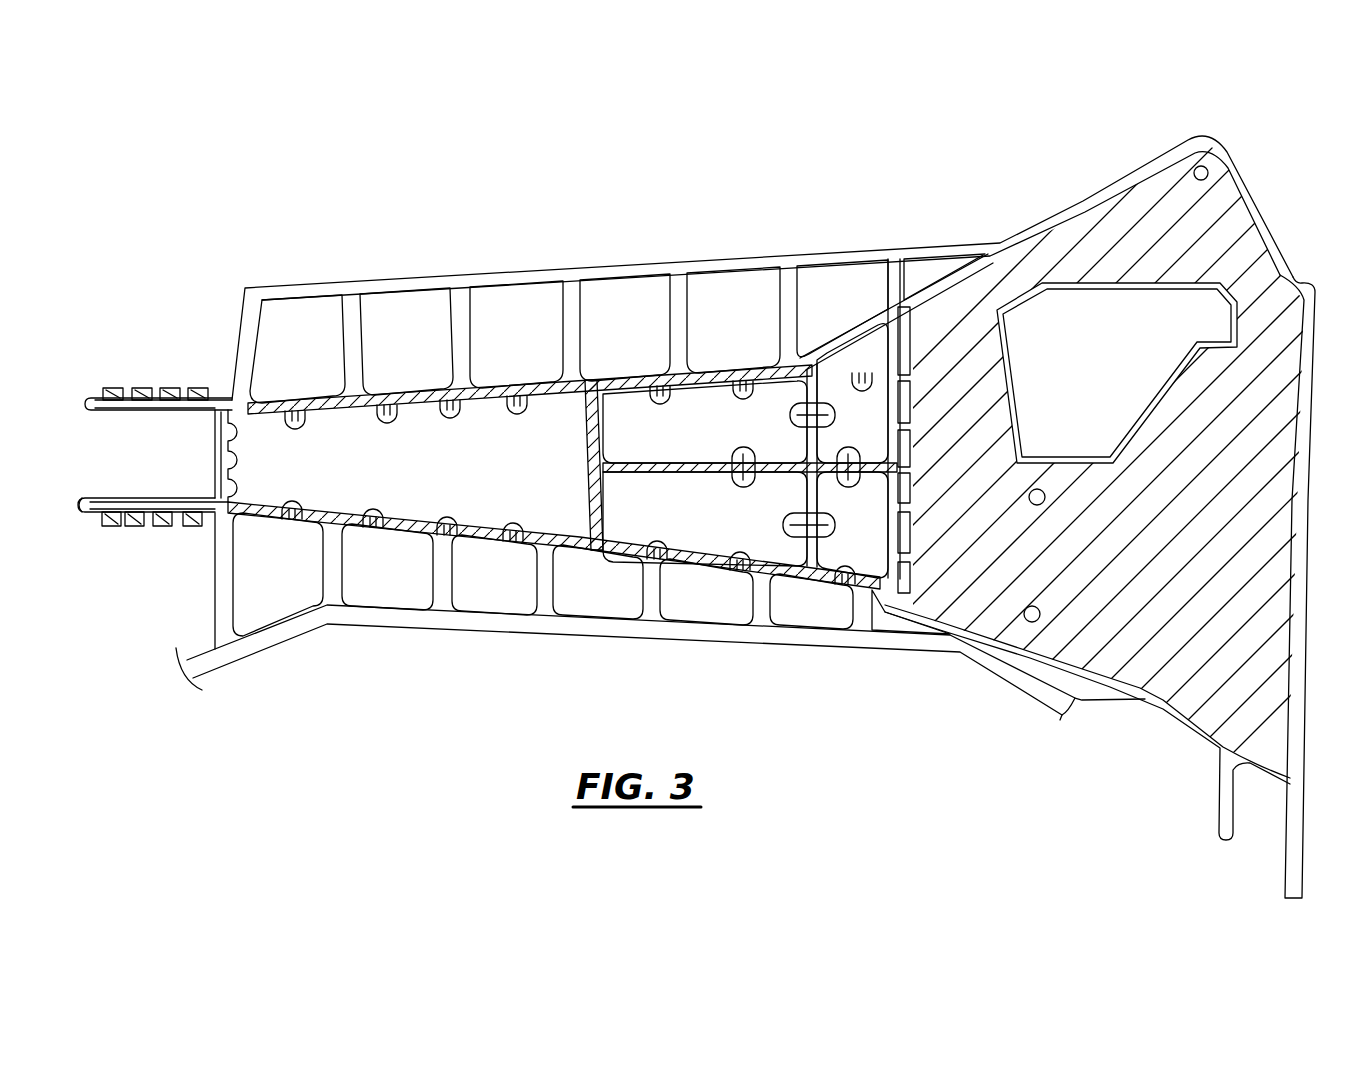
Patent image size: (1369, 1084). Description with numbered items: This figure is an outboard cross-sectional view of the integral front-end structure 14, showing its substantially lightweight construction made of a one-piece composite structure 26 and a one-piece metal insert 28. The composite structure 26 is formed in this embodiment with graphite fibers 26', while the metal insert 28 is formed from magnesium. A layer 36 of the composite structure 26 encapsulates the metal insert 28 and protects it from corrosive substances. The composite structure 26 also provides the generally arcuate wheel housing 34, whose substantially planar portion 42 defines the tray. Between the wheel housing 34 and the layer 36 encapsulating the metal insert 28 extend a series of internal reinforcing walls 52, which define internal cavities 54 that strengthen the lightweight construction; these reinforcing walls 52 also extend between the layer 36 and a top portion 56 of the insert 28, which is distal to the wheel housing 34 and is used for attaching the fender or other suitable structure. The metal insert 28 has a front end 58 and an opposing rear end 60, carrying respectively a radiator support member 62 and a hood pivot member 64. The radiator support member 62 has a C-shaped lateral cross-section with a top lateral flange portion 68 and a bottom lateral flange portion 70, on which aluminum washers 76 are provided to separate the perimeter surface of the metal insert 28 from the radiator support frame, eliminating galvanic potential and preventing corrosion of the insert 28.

The integral front-end structure 14 is at (318, 138).
The one-piece composite structure 26 is at (252, 298).
The graphite fibers 26' is at (416, 294).
The one-piece metal insert 28 is at (90, 385).
The wheel housing 34 is at (624, 645).
The layer 36 is at (418, 388).
The planar portion 42 is at (408, 625).
The internal reinforcing walls 52 is at (890, 282).
The internal cavities 54 is at (643, 334).
The top portion 56 is at (528, 265).
The front end 58 is at (88, 517).
The rear end 60 is at (1300, 282).
The radiator support member 62 is at (95, 502).
The hood pivot member 64 is at (1235, 178).
The top lateral flange portion 68 is at (93, 403).
The bottom lateral flange portion 70 is at (183, 522).
The washers 76 is at (176, 378).